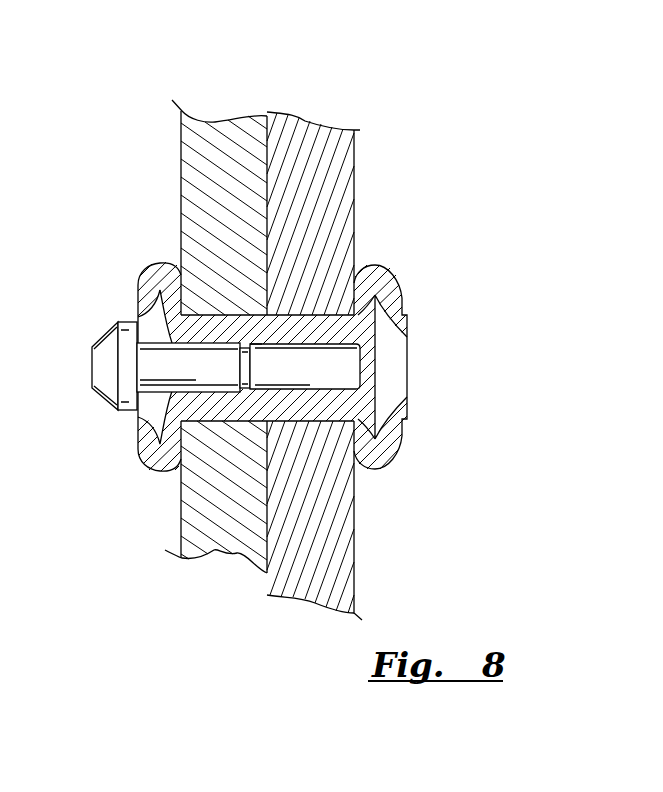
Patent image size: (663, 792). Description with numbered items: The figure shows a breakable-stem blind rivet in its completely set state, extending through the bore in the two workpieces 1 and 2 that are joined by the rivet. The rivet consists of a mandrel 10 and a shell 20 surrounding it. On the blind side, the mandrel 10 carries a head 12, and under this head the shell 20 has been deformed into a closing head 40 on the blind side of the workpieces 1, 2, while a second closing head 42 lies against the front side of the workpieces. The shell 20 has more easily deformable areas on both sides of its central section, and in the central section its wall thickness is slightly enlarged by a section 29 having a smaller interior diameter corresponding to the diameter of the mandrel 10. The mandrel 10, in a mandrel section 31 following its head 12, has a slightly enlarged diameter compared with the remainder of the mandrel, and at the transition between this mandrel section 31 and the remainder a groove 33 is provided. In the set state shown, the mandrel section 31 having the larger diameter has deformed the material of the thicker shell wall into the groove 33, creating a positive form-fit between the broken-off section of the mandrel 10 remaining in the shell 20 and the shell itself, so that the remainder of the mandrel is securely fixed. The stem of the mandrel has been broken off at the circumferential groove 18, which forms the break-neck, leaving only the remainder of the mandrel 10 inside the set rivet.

The workpiece 1 is at (221, 531).
The workpiece 2 is at (338, 536).
The mandrel 10 is at (267, 378).
The head 12 is at (105, 403).
The circumferential groove 18 is at (362, 372).
The shell 20 is at (305, 410).
The section having a smaller interior diameter 29 is at (262, 340).
The mandrel section 31 is at (157, 358).
The groove 33 is at (245, 387).
The closing head 40 is at (142, 462).
The closing head 42 is at (380, 268).